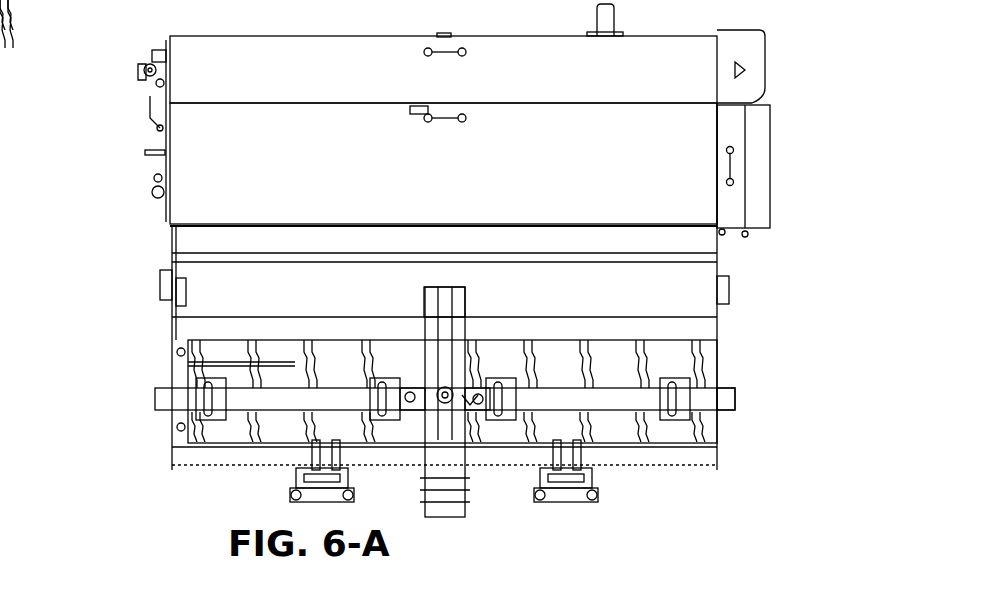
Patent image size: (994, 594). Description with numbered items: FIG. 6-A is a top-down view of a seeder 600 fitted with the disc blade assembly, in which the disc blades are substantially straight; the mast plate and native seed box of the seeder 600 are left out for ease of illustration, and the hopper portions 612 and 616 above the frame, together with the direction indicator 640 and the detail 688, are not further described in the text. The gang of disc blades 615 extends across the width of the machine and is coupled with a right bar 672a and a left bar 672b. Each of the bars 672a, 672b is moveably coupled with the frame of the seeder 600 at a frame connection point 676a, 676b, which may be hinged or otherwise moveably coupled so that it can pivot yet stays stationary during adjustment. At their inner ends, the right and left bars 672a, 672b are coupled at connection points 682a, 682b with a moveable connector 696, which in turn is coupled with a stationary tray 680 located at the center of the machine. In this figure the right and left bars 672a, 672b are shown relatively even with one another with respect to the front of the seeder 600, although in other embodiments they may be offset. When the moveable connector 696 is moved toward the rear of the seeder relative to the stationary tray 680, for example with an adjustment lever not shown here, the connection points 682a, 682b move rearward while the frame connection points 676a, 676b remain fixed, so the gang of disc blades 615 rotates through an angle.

The seeder 600 is at (110, 75).
The hopper lower section 612 is at (212, 143).
The hopper upper section 616 is at (672, 59).
The gang of disc blades 615 is at (625, 370).
The direction of travel 640 is at (448, 527).
The right bar 672a is at (283, 400).
The left bar 672b is at (590, 390).
The frame connection point 676a is at (155, 392).
The frame connection point 676b is at (718, 403).
The stationary tray 680 is at (440, 503).
The connection point 682a is at (405, 395).
The connection point 682b is at (470, 400).
The coupler 688 is at (482, 395).
The moveable connector 696 is at (438, 395).